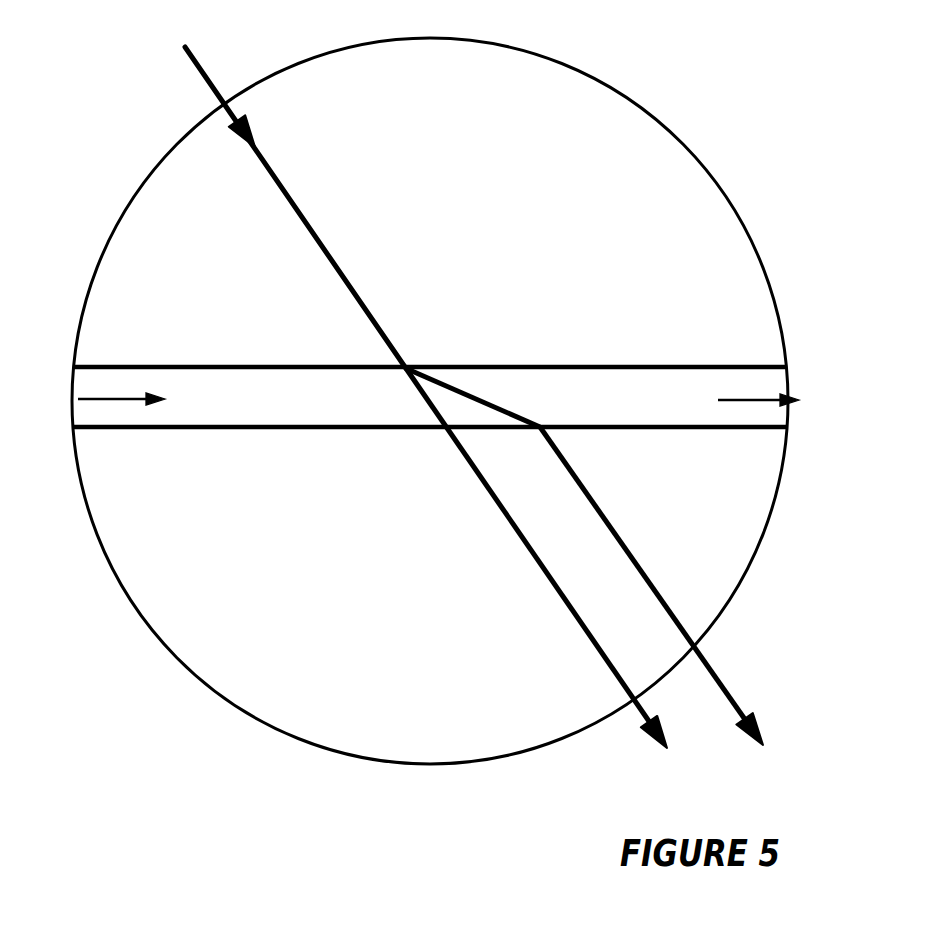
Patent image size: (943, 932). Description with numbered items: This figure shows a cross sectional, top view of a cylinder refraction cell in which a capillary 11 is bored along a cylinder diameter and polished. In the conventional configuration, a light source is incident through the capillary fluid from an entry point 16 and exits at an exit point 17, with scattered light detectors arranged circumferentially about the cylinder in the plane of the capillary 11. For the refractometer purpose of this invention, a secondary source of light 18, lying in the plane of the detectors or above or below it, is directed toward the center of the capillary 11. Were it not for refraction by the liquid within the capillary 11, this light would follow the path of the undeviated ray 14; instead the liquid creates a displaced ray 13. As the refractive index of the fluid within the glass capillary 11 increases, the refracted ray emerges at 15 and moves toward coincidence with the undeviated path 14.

The capillary 11 is at (430, 397).
The refracted ray displaced by the liquid 13 is at (485, 397).
The path of undeviated ray 14 is at (543, 577).
The emerging refracted ray 15 is at (661, 607).
The light source incidence point 16 is at (99, 399).
The light exit point 17 is at (777, 401).
The secondary source of light 18 is at (277, 186).